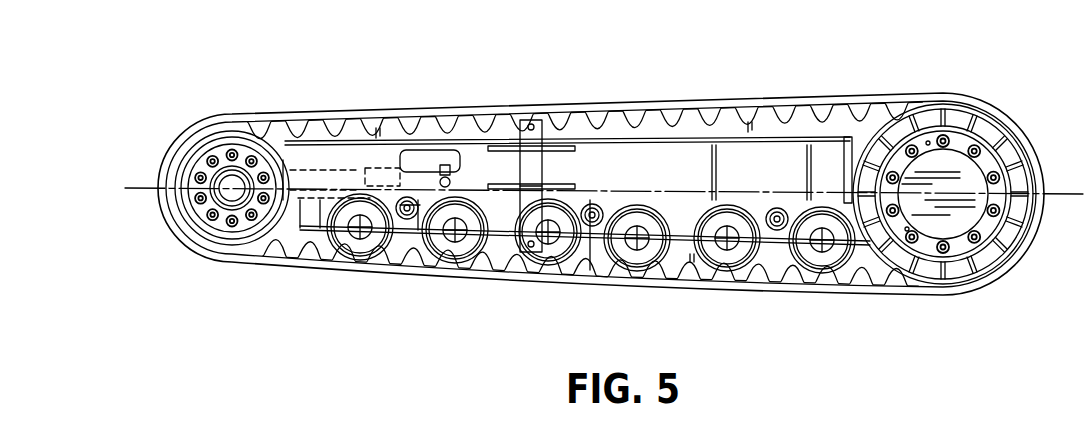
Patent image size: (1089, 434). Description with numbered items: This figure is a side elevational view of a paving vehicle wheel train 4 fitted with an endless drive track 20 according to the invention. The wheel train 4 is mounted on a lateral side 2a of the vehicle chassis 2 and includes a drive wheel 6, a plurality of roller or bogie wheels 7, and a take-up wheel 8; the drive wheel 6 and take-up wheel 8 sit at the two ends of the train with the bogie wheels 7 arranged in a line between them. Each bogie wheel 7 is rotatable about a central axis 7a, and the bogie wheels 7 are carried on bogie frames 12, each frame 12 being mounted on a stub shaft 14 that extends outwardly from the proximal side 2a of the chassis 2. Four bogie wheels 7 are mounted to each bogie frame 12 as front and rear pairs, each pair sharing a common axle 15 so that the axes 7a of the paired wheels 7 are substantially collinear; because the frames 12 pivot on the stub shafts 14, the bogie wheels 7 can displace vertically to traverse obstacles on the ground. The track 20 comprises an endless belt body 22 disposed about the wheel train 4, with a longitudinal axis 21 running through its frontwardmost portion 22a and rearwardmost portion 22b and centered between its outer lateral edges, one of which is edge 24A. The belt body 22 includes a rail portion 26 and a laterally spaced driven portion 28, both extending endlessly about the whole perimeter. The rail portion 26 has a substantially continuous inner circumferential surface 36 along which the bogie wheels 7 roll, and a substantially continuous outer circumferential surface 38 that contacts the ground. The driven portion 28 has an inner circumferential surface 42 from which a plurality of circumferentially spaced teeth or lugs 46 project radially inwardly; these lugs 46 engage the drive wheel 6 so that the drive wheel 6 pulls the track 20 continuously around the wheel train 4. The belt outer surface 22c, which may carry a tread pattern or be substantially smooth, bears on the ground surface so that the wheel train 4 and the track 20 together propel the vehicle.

The vehicle chassis 2 is at (700, 146).
The lateral side of the chassis 2a is at (835, 130).
The wheel train 4 is at (312, 238).
The drive wheel 6 is at (940, 230).
The bogie wheels 7 is at (368, 246).
The central axis 7a is at (456, 229).
The take-up wheel 8 is at (222, 140).
The bogie frame 12 is at (418, 236).
The stub shaft 14 is at (408, 203).
The common axle 15 is at (354, 240).
The endless drive track 20 is at (352, 100).
The longitudinal axis 21 is at (147, 196).
The belt body 22 is at (489, 284).
The frontwardmost portion of the belt body 22a is at (160, 175).
The rearwardmost portion of the belt body 22b is at (1044, 208).
The belt outer surface 22c is at (949, 298).
The outer lateral edge 24A is at (632, 108).
The rail portion 26 is at (502, 108).
The driven portion 28 is at (572, 120).
The inner circumferential surface of the rail portion 36 is at (453, 124).
The outer circumferential surface of the rail portion 38 is at (415, 108).
The inner circumferential surface of the driven portion 42 is at (812, 110).
The teeth or lugs 46 is at (378, 130).